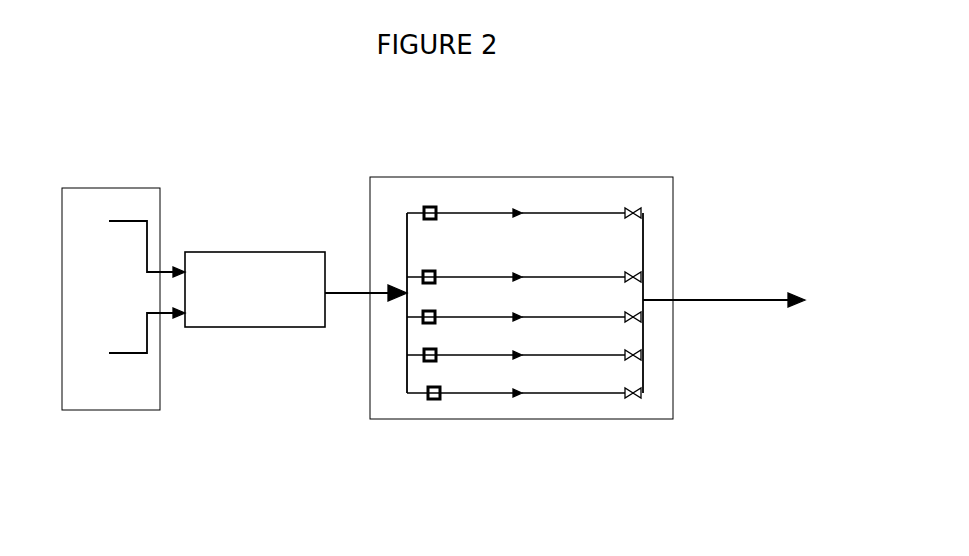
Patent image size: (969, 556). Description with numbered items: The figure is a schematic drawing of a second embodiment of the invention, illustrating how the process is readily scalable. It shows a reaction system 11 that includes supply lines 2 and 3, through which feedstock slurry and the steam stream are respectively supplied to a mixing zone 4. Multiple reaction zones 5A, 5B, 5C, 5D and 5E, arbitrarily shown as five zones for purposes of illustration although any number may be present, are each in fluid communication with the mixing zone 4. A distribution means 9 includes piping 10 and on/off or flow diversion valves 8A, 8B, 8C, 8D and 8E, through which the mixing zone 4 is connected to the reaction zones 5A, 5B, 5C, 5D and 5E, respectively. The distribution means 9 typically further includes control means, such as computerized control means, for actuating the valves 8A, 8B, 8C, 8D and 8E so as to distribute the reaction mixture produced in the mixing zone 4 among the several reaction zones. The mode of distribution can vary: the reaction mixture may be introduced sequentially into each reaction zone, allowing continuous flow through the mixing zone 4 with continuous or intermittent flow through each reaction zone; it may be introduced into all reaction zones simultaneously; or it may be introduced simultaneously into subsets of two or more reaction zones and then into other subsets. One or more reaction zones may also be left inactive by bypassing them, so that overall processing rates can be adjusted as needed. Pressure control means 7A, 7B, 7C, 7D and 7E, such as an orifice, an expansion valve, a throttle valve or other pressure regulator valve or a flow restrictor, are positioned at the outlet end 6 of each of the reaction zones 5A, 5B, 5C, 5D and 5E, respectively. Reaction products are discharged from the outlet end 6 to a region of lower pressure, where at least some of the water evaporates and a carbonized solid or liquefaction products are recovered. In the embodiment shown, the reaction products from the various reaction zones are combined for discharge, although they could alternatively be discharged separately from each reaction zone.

The supply line 2 is at (137, 229).
The supply line 3 is at (130, 343).
The mixing zone 4 is at (255, 289).
The reaction zone 5A is at (538, 212).
The reaction zone 5B is at (565, 272).
The reaction zone 5C is at (587, 318).
The reaction zone 5D is at (558, 355).
The reaction zone 5E is at (517, 393).
The outlet end 6 is at (650, 294).
The pressure control means 7A is at (635, 202).
The pressure control means 7B is at (640, 268).
The pressure control means 7C is at (642, 318).
The pressure control means 7D is at (640, 357).
The pressure control means 7E is at (632, 393).
The on/off or flow diversion valve 8A is at (435, 203).
The on/off or flow diversion valve 8B is at (420, 270).
The on/off or flow diversion valve 8C is at (418, 320).
The on/off or flow diversion valve 8D is at (420, 354).
The on/off or flow diversion valve 8E is at (425, 400).
The distribution means 9 is at (388, 260).
The piping 10 is at (408, 352).
The reaction system 11 is at (257, 462).